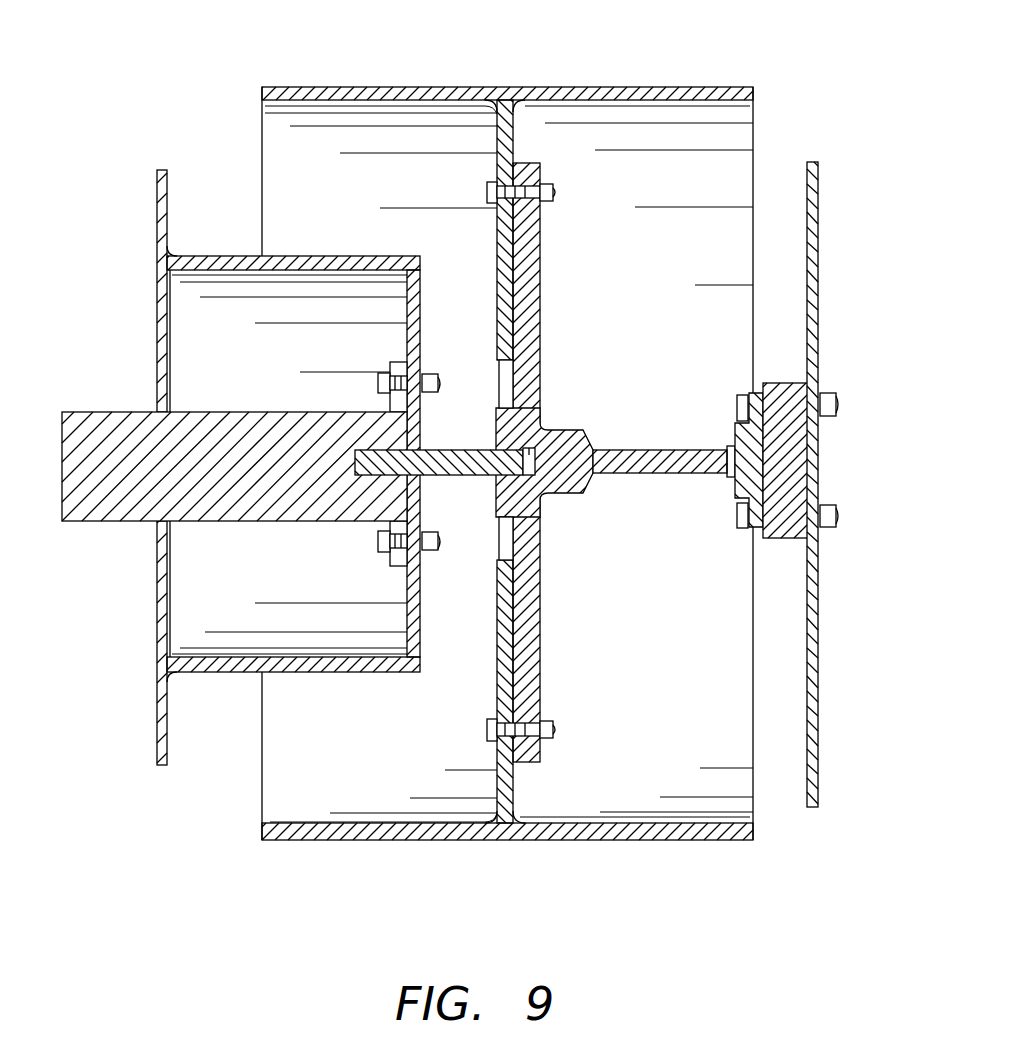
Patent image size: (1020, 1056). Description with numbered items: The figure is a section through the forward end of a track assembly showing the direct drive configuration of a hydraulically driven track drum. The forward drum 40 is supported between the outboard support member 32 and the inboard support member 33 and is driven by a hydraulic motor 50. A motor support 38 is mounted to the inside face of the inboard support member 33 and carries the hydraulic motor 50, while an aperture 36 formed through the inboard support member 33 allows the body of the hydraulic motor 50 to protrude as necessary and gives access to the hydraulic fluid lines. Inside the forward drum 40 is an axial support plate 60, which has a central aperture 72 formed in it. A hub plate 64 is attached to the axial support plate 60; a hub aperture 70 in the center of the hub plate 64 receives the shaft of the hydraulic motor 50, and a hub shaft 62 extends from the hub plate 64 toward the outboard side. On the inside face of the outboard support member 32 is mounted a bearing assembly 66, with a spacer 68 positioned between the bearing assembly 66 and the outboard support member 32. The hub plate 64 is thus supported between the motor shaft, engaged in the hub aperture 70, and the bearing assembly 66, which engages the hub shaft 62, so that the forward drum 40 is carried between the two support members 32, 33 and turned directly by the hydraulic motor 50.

The outboard support member 32 is at (818, 203).
The inboard support member 33 is at (157, 188).
The aperture 36 is at (155, 360).
The motor support 38 is at (240, 256).
The forward drum 40 is at (364, 87).
The hydraulic motor 50 is at (78, 412).
The axial support plate 60 is at (497, 168).
The hub shaft 62 is at (690, 450).
The hub plate 64 is at (540, 290).
The bearing assembly 66 is at (735, 500).
The spacer 68 is at (770, 540).
The hub aperture 70 is at (552, 428).
The central aperture 72 is at (498, 385).